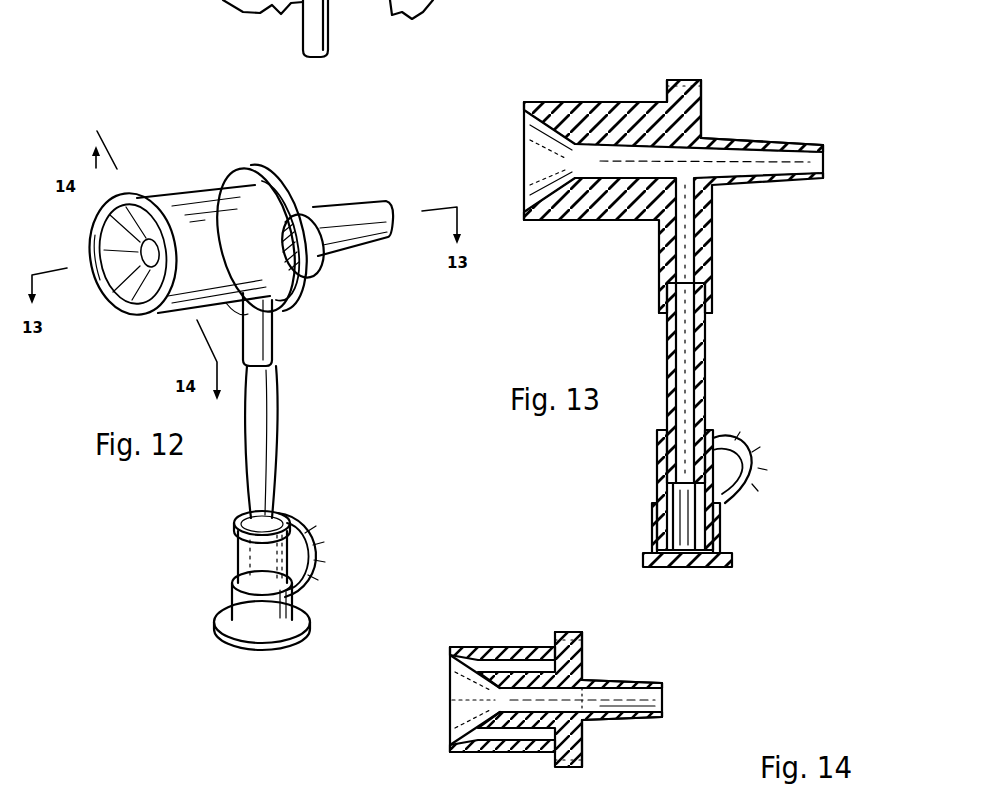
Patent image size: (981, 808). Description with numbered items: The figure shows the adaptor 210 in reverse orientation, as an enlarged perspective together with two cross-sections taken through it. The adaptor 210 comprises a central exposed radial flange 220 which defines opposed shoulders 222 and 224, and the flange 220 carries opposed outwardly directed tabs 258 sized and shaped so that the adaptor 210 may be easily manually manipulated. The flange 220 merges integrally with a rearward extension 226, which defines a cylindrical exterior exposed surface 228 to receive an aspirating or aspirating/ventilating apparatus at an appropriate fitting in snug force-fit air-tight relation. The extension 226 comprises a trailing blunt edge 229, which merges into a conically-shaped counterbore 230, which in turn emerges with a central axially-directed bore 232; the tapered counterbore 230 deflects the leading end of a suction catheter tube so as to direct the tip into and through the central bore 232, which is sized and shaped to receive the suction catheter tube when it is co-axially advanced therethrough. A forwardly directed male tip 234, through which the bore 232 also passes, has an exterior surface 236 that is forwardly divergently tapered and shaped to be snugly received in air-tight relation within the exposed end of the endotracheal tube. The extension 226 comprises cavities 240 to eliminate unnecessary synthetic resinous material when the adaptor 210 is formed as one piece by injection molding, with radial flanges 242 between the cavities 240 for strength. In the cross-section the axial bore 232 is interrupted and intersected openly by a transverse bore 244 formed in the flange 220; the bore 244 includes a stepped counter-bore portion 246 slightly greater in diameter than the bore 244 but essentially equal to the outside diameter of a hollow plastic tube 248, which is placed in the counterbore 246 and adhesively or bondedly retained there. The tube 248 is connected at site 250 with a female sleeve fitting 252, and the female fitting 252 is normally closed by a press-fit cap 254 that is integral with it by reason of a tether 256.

In FIG. 12, the adaptor 210 is at (198, 168).
In FIG. 13, the adaptor 210 is at (593, 84).
In FIG. 14, the adaptor 210 is at (465, 631).
In FIG. 12, the central exposed radial flange 220 is at (264, 177).
In FIG. 13, the central exposed radial flange 220 is at (684, 80).
In FIG. 14, the central exposed radial flange 220 is at (574, 632).
In FIG. 12, the shoulder 222 is at (238, 176).
In FIG. 13, the shoulder 222 is at (660, 96).
In FIG. 14, the shoulder 222 is at (553, 640).
In FIG. 12, the shoulder 224 is at (301, 190).
In FIG. 13, the shoulder 224 is at (702, 97).
In FIG. 14, the shoulder 224 is at (584, 640).
In FIG. 12, the rearward extension 226 is at (160, 192).
In FIG. 13, the rearward extension 226 is at (565, 108).
In FIG. 12, the cylindrical exterior exposed surface 228 is at (203, 249).
In FIG. 13, the cylindrical exterior exposed surface 228 is at (554, 221).
In FIG. 12, the trailing blunt edge 229 is at (118, 318).
In FIG. 13, the trailing blunt edge 229 is at (524, 103).
In FIG. 14, the trailing blunt edge 229 is at (450, 647).
In FIG. 12, the conically-shaped counterbore 230 is at (132, 254).
In FIG. 13, the conically-shaped counterbore 230 is at (549, 161).
In FIG. 14, the conically-shaped counterbore 230 is at (475, 700).
In FIG. 12, the central axially-directed bore 232 is at (134, 314).
In FIG. 13, the central axially-directed bore 232 is at (775, 157).
In FIG. 14, the central axially-directed bore 232 is at (645, 690).
In FIG. 12, the male tip 234 is at (366, 203).
In FIG. 13, the male tip 234 is at (784, 185).
In FIG. 14, the male tip 234 is at (615, 681).
In FIG. 12, the exterior surface 236 is at (333, 204).
In FIG. 13, the exterior surface 236 is at (754, 138).
In FIG. 14, the exterior surface 236 is at (658, 721).
In FIG. 14, the cavities 240 is at (488, 648).
In FIG. 14, the radial flanges 242 is at (588, 668).
In FIG. 13, the transverse bore 244 is at (690, 247).
In FIG. 13, the stepped counter-bore portion 246 is at (668, 318).
In FIG. 12, the hollow plastic tube 248 is at (268, 386).
In FIG. 13, the hollow plastic tube 248 is at (706, 330).
In FIG. 13, the site 250 is at (702, 418).
In FIG. 12, the female sleeve fitting 252 is at (242, 562).
In FIG. 13, the female sleeve fitting 252 is at (658, 485).
In FIG. 12, the press-fit cap 254 is at (242, 650).
In FIG. 13, the press-fit cap 254 is at (706, 566).
In FIG. 12, the tether 256 is at (312, 530).
In FIG. 13, the tether 256 is at (752, 448).
In FIG. 12, the tabs 258 is at (309, 267).